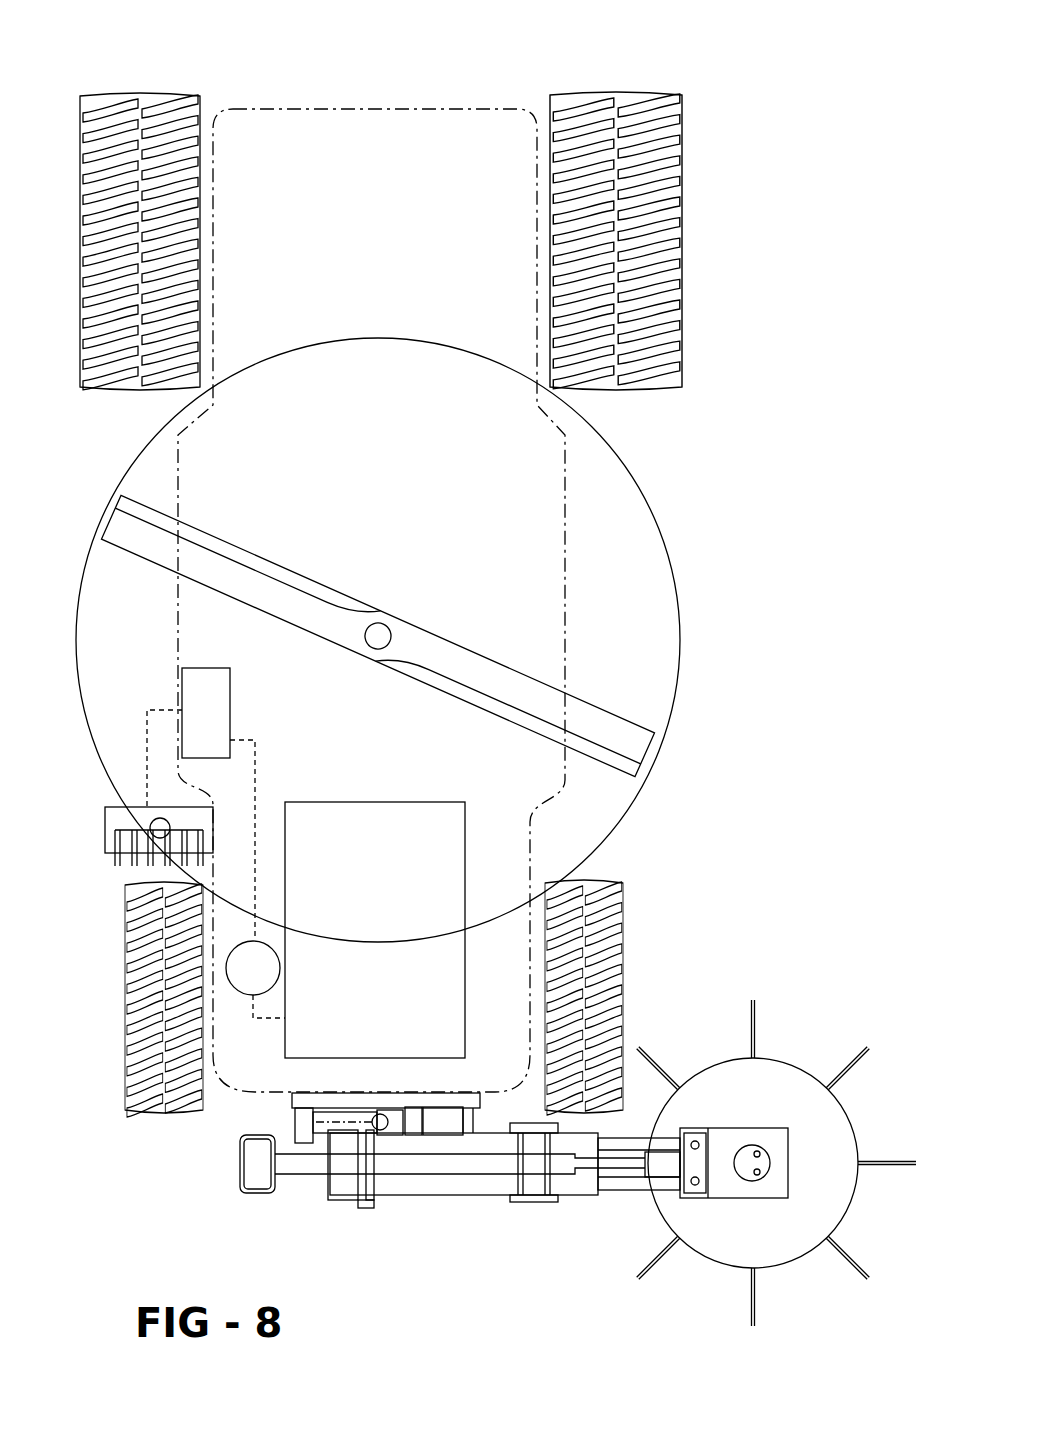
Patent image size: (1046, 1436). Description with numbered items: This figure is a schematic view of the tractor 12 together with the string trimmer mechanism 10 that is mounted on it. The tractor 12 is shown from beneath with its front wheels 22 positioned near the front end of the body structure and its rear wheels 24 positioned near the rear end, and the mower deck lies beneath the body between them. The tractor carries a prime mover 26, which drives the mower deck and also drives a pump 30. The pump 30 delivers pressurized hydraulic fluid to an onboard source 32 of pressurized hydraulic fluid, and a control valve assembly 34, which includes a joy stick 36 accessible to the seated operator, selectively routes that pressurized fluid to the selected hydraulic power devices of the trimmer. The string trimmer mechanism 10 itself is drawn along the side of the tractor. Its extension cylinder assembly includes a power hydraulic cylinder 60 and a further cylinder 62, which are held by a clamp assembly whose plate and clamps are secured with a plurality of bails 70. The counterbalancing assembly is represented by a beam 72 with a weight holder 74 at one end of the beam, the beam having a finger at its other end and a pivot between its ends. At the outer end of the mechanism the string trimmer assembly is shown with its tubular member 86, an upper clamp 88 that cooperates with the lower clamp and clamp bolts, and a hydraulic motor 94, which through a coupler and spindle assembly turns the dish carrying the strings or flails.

The string trimmer mechanism 10 is at (401, 1244).
The tractor 12 is at (460, 98).
The front wheels 22 is at (623, 897).
The rear wheels 24 is at (198, 100).
The prime mover 26 is at (360, 986).
The pump 30 is at (240, 982).
The onboard source of pressurized hydraulic fluid 32 is at (193, 721).
The control valve assembly 34 is at (97, 864).
The joy stick 36 is at (150, 826).
The power hydraulic cylinder 60 is at (500, 1115).
The further cylinder 62 is at (437, 1197).
The bails 70 is at (513, 1202).
The beam 72 is at (301, 1178).
The weight holder 74 is at (238, 1180).
The tubular member 86 is at (732, 1192).
The upper clamp 88 is at (675, 1193).
The hydraulic motor 94 is at (768, 1163).